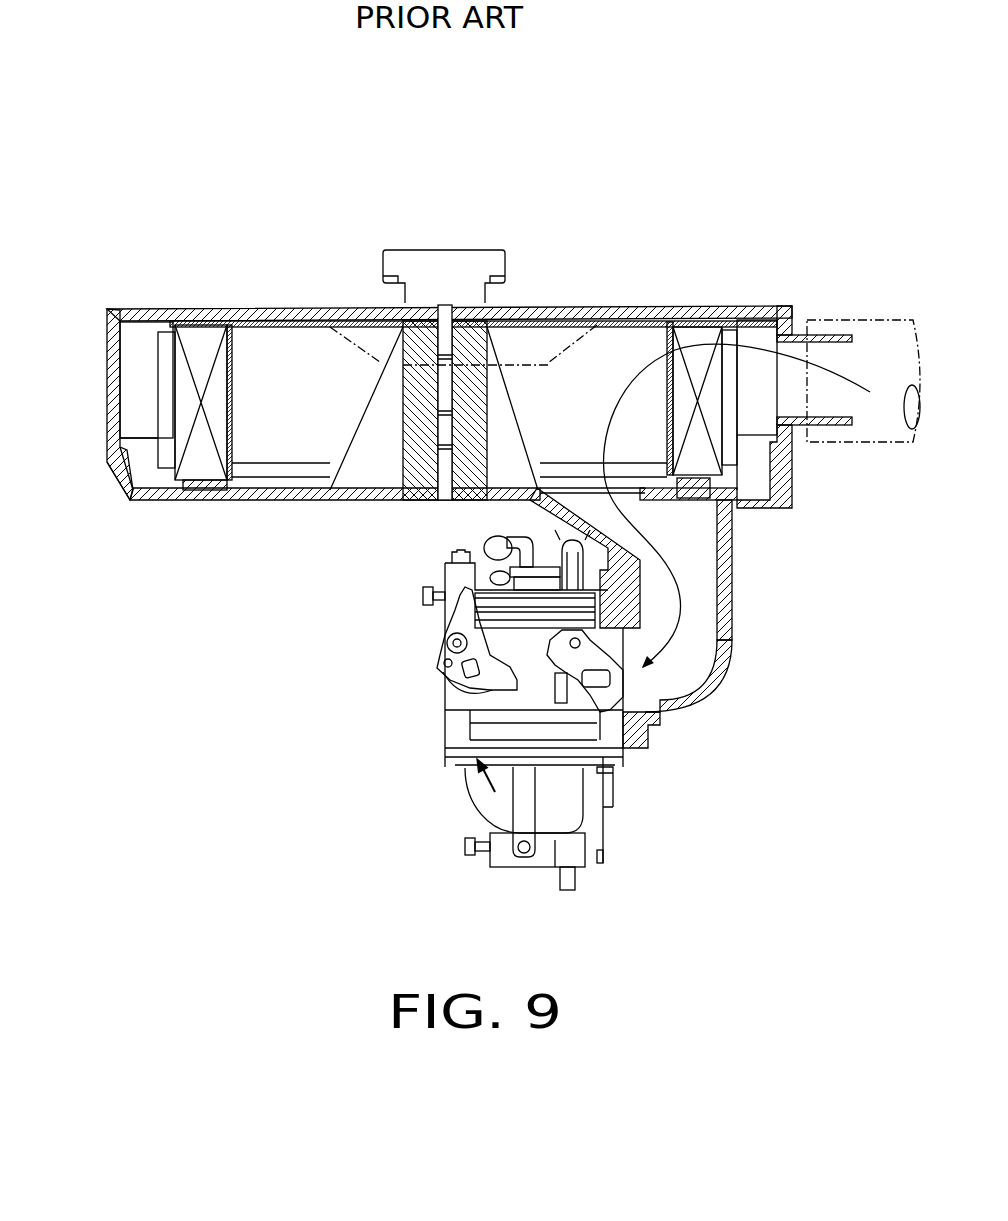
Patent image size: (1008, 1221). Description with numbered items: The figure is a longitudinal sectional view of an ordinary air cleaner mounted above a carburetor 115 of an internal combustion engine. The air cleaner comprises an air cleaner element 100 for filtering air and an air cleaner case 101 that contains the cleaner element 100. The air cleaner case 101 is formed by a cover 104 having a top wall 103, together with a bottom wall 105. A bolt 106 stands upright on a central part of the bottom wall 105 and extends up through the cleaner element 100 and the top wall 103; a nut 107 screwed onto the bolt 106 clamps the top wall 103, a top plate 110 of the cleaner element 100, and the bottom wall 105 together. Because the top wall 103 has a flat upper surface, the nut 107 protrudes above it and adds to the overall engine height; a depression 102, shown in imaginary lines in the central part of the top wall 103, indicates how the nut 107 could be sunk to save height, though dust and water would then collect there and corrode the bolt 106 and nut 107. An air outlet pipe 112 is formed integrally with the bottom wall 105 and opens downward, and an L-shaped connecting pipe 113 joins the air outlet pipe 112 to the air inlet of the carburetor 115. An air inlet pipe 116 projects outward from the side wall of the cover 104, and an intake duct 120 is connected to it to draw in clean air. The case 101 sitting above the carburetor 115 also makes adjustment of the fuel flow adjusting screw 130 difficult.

The air cleaner element 100 is at (218, 378).
The air cleaner case 101 is at (112, 480).
The depression 102 is at (527, 365).
The top wall 103 is at (277, 306).
The cover 104 is at (110, 372).
The bottom wall 105 is at (276, 502).
The bolt 106 is at (443, 390).
The nut 107 is at (385, 262).
The top plate 110 is at (632, 320).
The air outlet pipe 112 is at (712, 523).
The L-shaped connecting pipe 113 is at (683, 682).
The carburetor 115 is at (445, 737).
The air inlet pipe 116 is at (830, 338).
The intake duct 120 is at (860, 447).
The fuel flow adjusting screw 130 is at (453, 556).